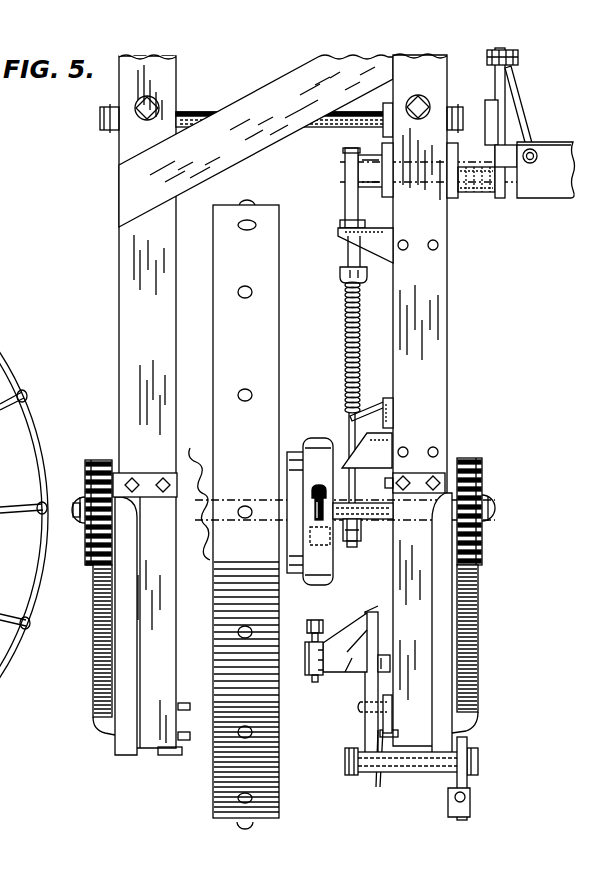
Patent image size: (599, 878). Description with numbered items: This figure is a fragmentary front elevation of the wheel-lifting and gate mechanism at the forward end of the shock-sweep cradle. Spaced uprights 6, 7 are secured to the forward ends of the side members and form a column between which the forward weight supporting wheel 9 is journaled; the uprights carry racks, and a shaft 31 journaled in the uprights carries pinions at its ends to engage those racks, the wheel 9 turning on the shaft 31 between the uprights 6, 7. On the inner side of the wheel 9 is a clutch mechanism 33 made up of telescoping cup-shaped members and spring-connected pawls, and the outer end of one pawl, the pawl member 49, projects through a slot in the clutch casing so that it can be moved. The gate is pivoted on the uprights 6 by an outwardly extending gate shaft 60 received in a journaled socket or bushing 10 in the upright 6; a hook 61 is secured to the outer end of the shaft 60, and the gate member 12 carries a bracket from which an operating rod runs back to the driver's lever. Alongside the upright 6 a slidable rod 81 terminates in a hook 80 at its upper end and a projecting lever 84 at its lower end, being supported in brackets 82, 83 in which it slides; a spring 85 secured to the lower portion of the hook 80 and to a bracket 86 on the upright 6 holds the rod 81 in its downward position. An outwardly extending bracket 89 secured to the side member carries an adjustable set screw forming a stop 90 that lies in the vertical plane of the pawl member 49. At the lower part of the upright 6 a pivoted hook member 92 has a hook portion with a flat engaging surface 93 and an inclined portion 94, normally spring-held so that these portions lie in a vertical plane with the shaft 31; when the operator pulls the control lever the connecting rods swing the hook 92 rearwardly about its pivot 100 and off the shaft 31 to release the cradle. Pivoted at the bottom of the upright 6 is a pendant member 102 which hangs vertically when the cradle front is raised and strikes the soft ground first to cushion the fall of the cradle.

The upright 6 is at (438, 232).
The upright 7 is at (133, 290).
The forward weight supporting wheel 9 is at (270, 272).
The journaled socket 10 is at (447, 192).
The gate member 12 is at (548, 188).
The shaft 31 is at (366, 522).
The clutch mechanism 33 is at (311, 440).
The outer end of pawl 49 is at (319, 485).
The gate shaft 60 is at (464, 162).
The hook 61 is at (353, 210).
The hook 80 is at (347, 242).
The rod 81 is at (350, 440).
The bracket 82 is at (380, 245).
The bracket 83 is at (367, 452).
The projecting lever 84 is at (322, 548).
The spring 85 is at (360, 330).
The bracket 86 is at (378, 413).
The outwardly extending bracket 89 is at (350, 640).
The stop 90 is at (312, 680).
The pivoted hook member 92 is at (360, 695).
The flat engaging surface 93 is at (366, 670).
The inclined portion 94 is at (372, 623).
The pivot 100 is at (348, 772).
The pendant member 102 is at (462, 777).